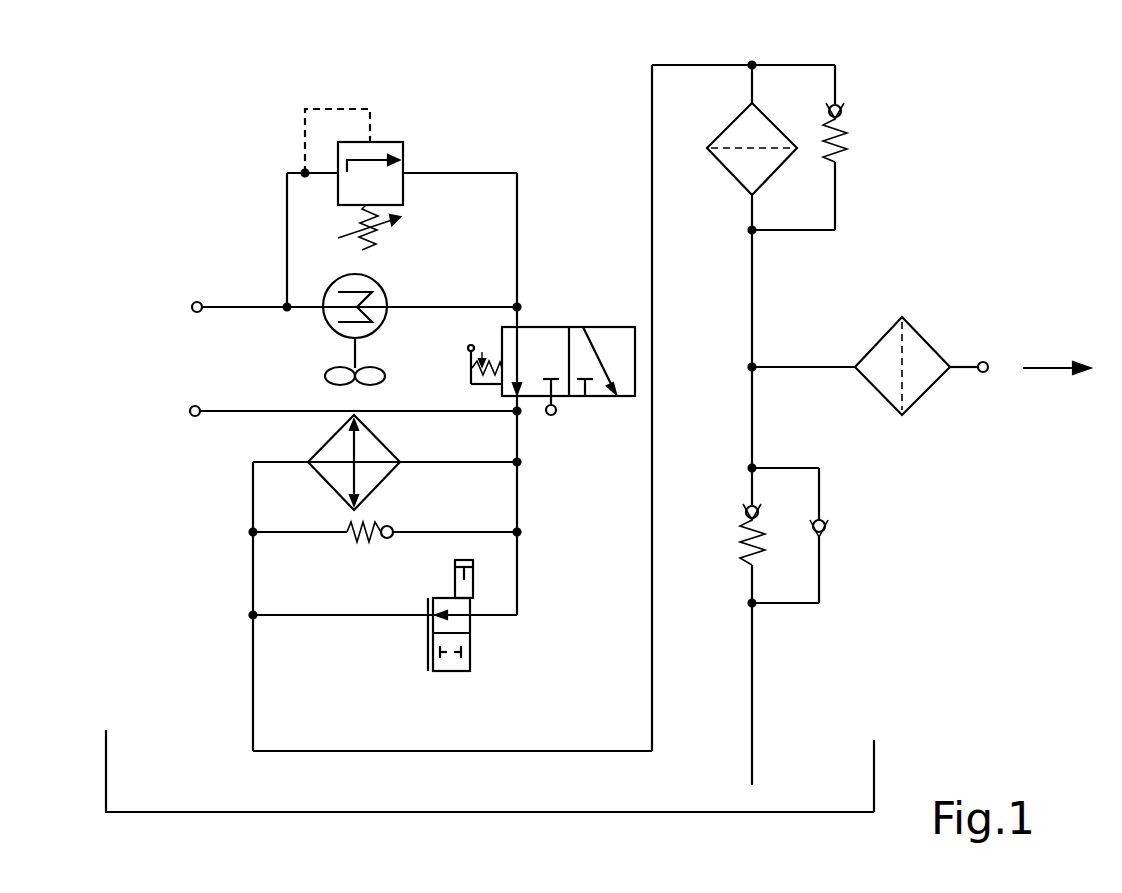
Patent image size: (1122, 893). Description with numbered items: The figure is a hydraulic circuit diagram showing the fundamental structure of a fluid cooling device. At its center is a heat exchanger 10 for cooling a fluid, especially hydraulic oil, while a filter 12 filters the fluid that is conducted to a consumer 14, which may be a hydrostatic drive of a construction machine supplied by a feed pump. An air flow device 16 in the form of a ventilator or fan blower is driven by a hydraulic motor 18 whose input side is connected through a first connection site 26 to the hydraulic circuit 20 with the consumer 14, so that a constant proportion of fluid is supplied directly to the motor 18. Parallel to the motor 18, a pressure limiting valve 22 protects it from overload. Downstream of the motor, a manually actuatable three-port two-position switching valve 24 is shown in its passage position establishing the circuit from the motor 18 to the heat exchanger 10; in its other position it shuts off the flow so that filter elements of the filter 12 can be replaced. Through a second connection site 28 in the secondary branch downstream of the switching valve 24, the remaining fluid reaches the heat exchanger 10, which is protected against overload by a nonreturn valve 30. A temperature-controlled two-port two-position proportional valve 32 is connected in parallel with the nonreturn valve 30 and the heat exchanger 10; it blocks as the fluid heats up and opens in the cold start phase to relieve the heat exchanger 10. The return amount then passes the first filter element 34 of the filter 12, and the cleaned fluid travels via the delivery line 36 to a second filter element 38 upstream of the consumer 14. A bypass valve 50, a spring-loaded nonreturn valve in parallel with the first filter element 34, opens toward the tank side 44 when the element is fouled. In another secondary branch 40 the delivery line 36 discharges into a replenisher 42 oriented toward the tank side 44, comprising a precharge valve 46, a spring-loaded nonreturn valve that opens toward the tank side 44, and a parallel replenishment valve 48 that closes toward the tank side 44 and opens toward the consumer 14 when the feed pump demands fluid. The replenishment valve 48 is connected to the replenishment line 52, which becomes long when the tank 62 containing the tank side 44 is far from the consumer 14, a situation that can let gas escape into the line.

The heat exchanger 10 is at (308, 437).
The filter 12 is at (787, 113).
The consumer 14 is at (988, 361).
The air flow device 16 is at (350, 352).
The hydraulic motor 18 is at (386, 291).
The hydraulic circuit 20 is at (218, 305).
The pressure limiting valve 22 is at (393, 141).
The 3/2-way switching valve 24 is at (535, 327).
The first connection site 26 is at (191, 304).
The second connection site 28 is at (190, 411).
The nonreturn valve 30 is at (392, 527).
The 2/2-way proportional valve 32 is at (473, 648).
The first filter element 34 is at (727, 121).
The delivery line 36 is at (752, 300).
The second filter element 38 is at (918, 333).
The secondary branch 40 is at (752, 412).
The replenisher 42 is at (828, 571).
The tank side 44 is at (845, 787).
The precharge valve 46 is at (743, 530).
The replenishment valve 48 is at (828, 520).
The bypass valve 50 is at (848, 135).
The replenishment line 52 is at (785, 604).
The tank 62 is at (785, 813).